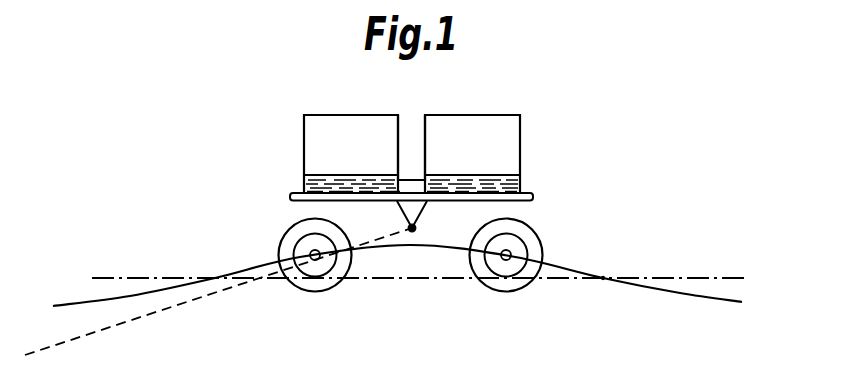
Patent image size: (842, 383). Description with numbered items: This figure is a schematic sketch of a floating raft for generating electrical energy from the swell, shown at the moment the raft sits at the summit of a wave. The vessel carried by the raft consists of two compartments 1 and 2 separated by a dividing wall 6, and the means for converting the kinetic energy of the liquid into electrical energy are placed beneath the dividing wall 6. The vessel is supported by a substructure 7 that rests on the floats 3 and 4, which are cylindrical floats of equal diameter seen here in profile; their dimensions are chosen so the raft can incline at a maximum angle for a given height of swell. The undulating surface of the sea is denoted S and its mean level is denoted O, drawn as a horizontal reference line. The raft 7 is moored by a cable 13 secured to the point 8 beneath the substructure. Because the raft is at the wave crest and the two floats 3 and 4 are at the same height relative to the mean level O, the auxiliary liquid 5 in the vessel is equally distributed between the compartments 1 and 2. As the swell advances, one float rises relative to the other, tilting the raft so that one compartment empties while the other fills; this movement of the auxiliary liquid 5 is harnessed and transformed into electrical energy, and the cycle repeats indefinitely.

The compartment 1 is at (328, 132).
The compartment 2 is at (497, 130).
The float 3 is at (322, 287).
The float 4 is at (503, 288).
The auxiliary liquid 5 is at (503, 186).
The dividing wall 6 is at (411, 128).
The substructure 7 is at (531, 193).
The point 8 is at (416, 229).
The cable 13 is at (178, 305).
The surface of the sea S is at (603, 278).
The mean level O is at (716, 277).